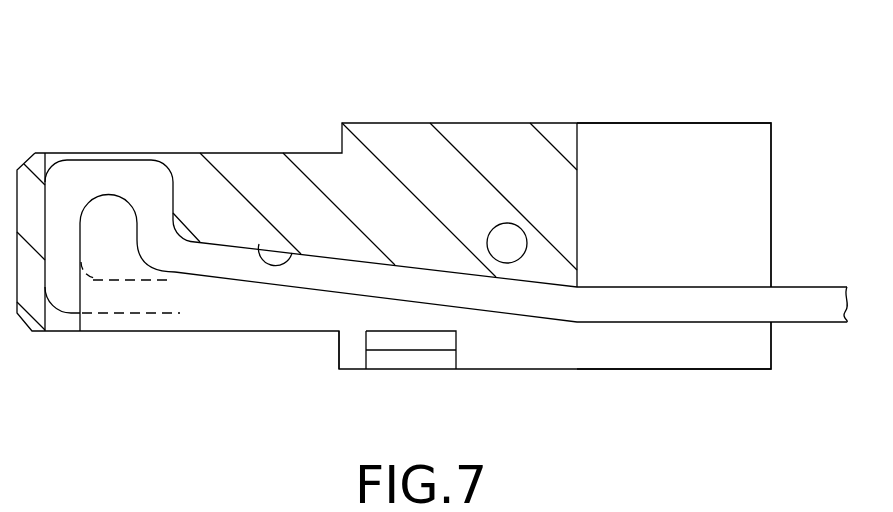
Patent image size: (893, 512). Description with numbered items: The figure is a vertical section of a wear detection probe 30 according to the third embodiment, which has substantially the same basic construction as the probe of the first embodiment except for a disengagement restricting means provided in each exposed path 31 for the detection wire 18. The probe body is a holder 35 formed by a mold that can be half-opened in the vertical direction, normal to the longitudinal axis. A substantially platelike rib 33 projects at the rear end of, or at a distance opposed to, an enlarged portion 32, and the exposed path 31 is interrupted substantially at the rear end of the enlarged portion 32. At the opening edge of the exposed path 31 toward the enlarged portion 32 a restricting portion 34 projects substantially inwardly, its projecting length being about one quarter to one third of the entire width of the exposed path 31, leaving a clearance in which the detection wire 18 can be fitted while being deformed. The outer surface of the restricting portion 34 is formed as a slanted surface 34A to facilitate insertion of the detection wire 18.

The wear detection probe 30 is at (550, 97).
The holder 35 is at (220, 118).
The enlarged portion 32 is at (422, 140).
The rib 33 is at (750, 200).
The detection wire 18 is at (633, 300).
The exposed path 31 is at (259, 244).
The restricting portion 34 is at (386, 335).
The slanted surface 34A is at (402, 358).